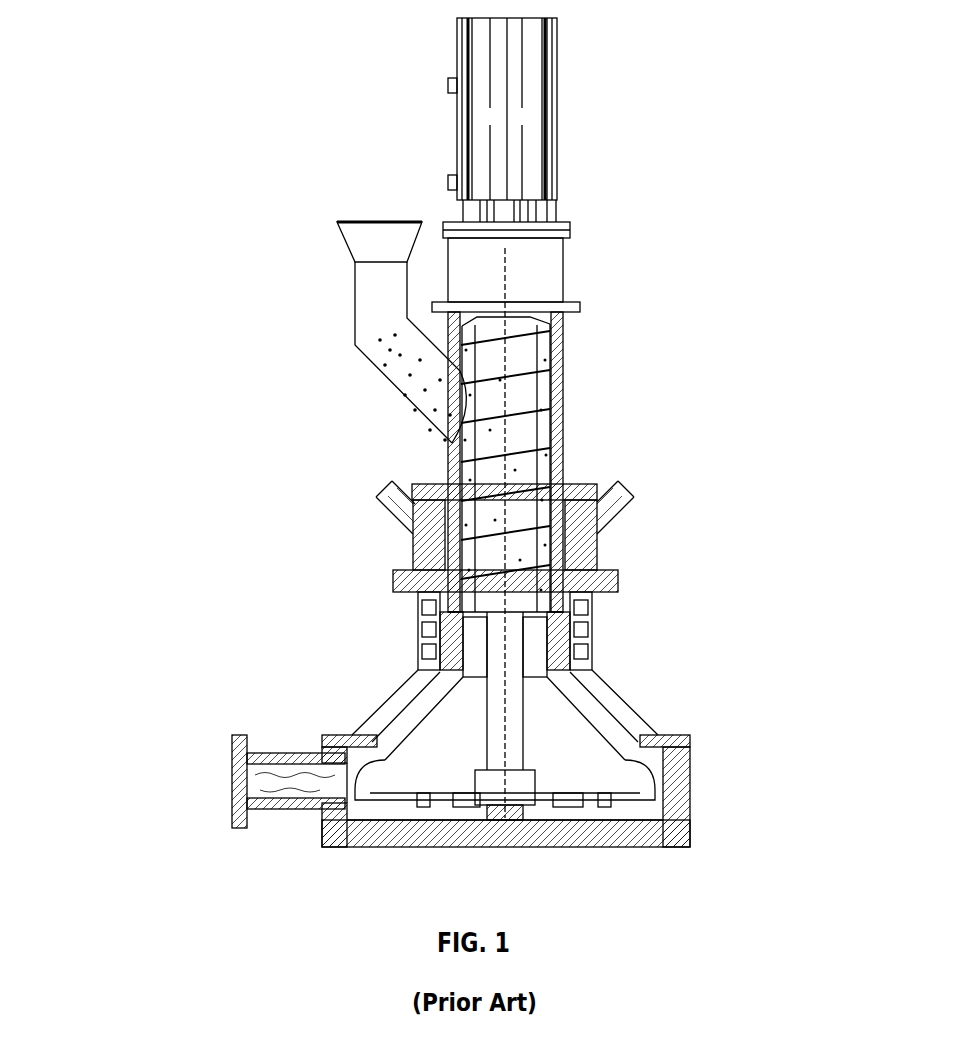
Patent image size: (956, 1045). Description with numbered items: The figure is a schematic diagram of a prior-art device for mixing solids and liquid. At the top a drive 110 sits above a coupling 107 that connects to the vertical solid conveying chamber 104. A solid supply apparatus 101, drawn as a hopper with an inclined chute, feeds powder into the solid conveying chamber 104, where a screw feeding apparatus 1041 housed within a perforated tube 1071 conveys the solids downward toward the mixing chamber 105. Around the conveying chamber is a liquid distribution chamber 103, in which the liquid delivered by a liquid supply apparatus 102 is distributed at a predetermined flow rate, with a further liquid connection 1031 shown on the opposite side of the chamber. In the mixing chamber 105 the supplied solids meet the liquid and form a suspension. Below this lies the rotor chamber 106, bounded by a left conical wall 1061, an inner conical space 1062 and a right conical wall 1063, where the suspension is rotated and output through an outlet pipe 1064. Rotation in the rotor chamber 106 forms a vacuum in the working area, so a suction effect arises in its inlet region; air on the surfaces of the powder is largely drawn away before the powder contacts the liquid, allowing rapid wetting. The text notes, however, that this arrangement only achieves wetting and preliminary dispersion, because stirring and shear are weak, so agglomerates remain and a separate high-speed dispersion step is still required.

The solid supply apparatus 101 is at (345, 222).
The liquid supply apparatus 102 is at (370, 495).
The liquid distribution chamber 103 is at (440, 555).
The outlet pipe of housing 1031 is at (415, 516).
The solid conveying chamber 104 is at (545, 412).
The screw feeding apparatus 1041 is at (522, 468).
The mixing chamber 105 is at (450, 636).
The rotor chamber 106 is at (667, 782).
The left cone wall 1061 is at (405, 720).
The cone chamber 1062 is at (558, 720).
The right cone wall 1063 is at (620, 720).
The discharge pipe 1064 is at (253, 788).
The coupling flange 107 is at (513, 322).
The perforated tube 1071 is at (528, 360).
The motor 110 is at (535, 165).